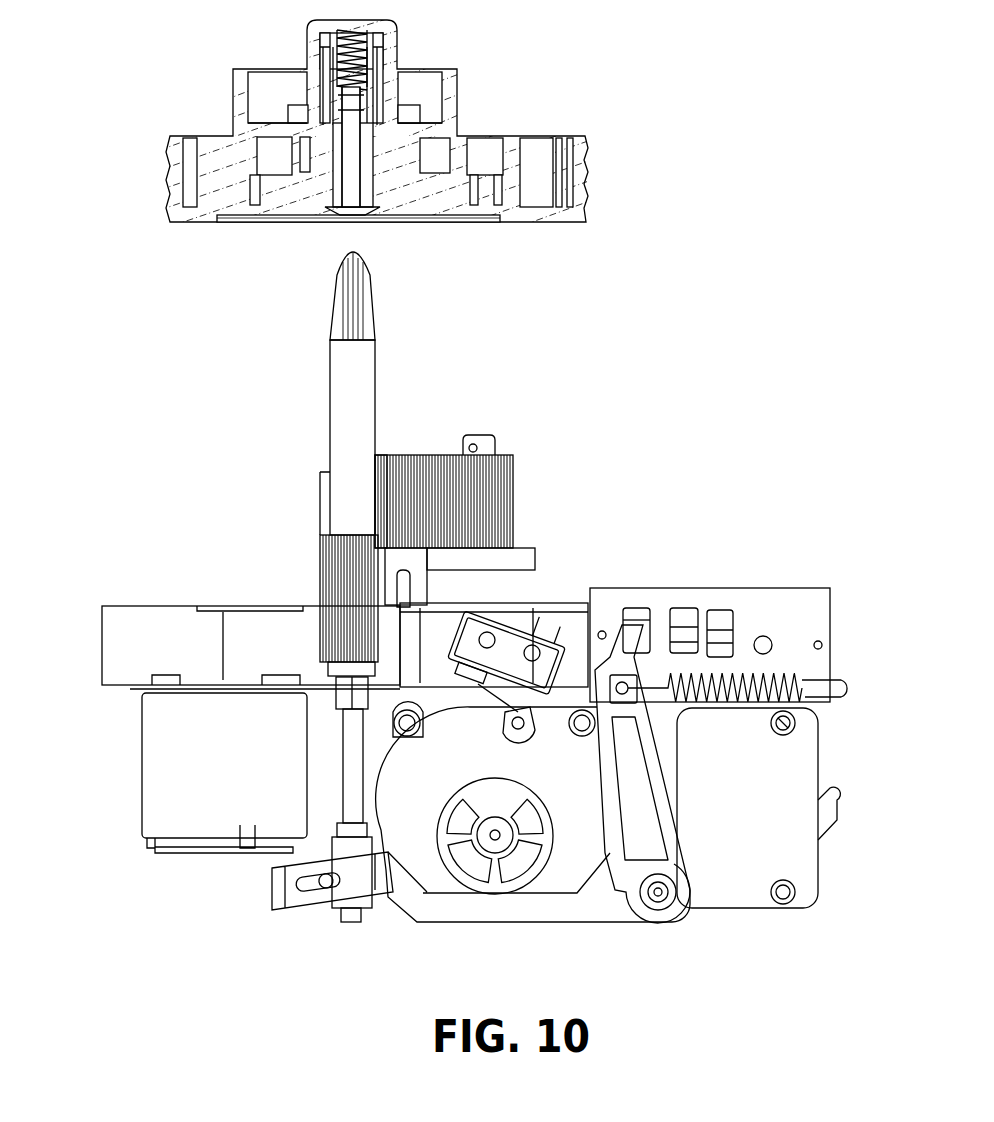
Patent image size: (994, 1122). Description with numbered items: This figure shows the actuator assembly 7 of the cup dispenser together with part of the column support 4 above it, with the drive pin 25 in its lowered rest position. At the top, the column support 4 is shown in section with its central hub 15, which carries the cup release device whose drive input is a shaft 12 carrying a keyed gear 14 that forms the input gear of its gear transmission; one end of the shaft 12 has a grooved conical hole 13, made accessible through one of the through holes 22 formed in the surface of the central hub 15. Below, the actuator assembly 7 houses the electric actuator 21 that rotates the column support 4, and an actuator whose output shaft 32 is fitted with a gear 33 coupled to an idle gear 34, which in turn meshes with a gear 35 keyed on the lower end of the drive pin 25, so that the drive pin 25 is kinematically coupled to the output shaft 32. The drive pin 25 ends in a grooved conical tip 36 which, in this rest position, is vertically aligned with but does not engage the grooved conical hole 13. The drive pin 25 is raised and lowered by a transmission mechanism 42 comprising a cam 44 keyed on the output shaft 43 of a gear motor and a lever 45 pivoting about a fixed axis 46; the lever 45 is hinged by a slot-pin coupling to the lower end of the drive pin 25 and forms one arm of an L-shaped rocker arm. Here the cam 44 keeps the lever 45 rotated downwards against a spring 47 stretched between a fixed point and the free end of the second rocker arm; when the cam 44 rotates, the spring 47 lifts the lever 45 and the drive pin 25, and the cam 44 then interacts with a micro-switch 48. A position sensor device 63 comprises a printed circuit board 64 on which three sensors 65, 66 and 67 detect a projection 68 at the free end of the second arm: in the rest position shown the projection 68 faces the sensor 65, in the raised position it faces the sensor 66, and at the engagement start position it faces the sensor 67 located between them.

The column support 4 is at (592, 175).
The shaft 12 is at (393, 147).
The grooved conical hole 13 is at (375, 190).
The gear 14 is at (390, 88).
The central hub 15 is at (513, 160).
The through holes 22 is at (343, 217).
The actuator assembly 7 is at (95, 723).
The electric actuator 21 is at (160, 775).
The drive pin 25 is at (338, 413).
The output shaft 32 is at (480, 440).
The gear 33 is at (520, 490).
The gear 34 is at (400, 455).
The gear 35 is at (318, 597).
The grooved conical tip 36 is at (340, 308).
The transmission mechanism 42 is at (674, 795).
The output shaft 43 is at (485, 800).
The cam 44 is at (470, 890).
The lever 45 is at (540, 905).
The fixed axis 46 is at (665, 910).
The spring 47 is at (810, 695).
The micro-switch 48 is at (520, 610).
The position sensor device 63 is at (797, 586).
The printed circuit board 64 is at (820, 610).
The sensor 65 is at (640, 608).
The sensor 66 is at (720, 612).
The sensor 67 is at (685, 608).
The projection 68 is at (630, 640).